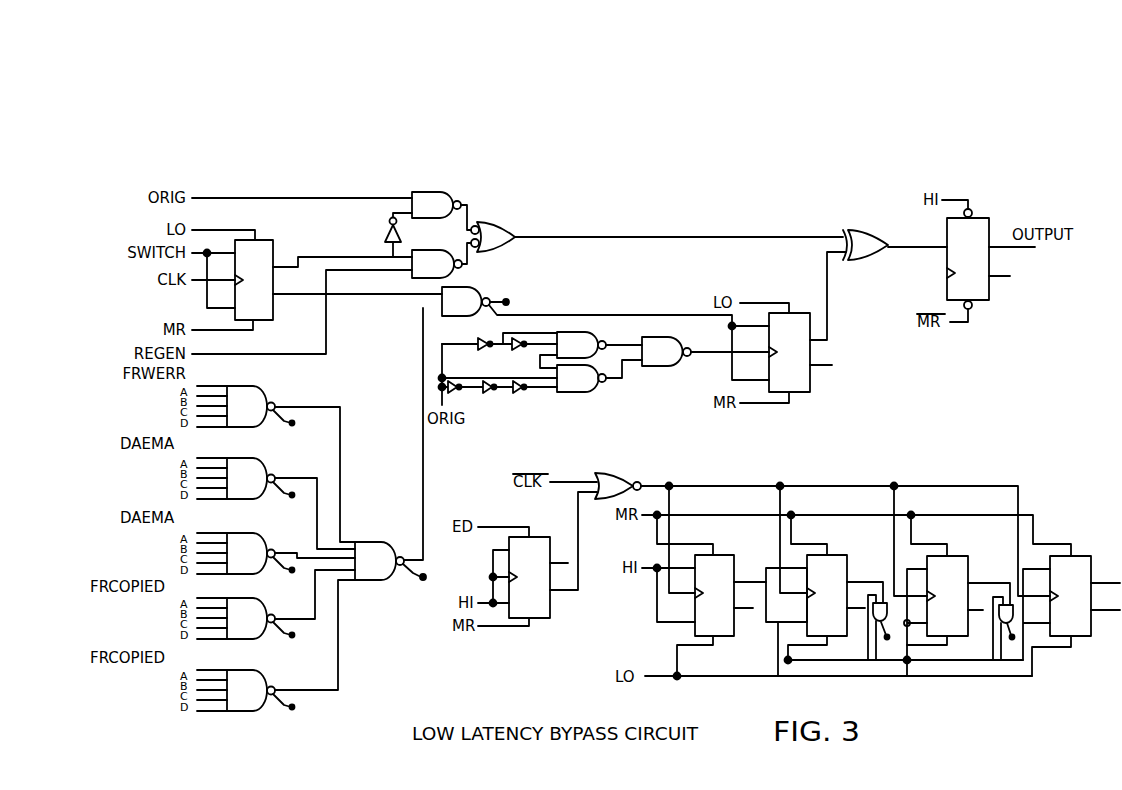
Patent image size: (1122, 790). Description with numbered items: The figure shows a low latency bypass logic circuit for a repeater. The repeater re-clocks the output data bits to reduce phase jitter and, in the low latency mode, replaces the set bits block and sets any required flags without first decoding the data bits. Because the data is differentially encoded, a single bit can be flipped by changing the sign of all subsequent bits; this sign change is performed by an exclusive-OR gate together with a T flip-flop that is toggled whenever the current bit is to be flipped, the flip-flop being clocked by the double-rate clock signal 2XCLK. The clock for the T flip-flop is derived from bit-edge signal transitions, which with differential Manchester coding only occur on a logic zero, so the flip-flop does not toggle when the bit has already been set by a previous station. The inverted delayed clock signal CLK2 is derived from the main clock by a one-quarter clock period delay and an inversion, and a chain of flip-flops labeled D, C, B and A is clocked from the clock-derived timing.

The flip-flop A is at (1076, 616).
The flip-flop B is at (968, 596).
The flip-flop C is at (835, 607).
The flip-flop D is at (721, 615).
The signal CLK2/ CLK2 is at (540, 361).
The 2XCLK clock input 2XCLK is at (947, 273).